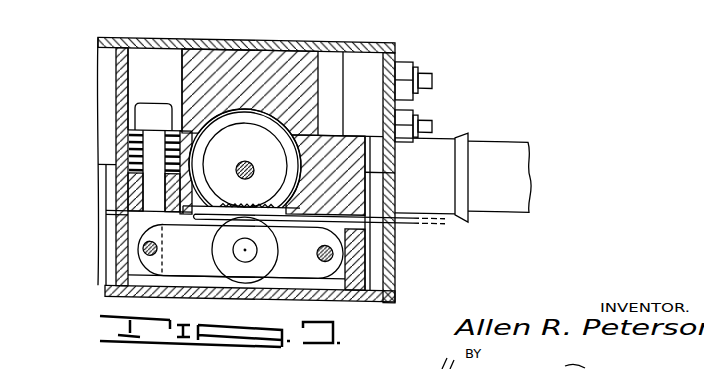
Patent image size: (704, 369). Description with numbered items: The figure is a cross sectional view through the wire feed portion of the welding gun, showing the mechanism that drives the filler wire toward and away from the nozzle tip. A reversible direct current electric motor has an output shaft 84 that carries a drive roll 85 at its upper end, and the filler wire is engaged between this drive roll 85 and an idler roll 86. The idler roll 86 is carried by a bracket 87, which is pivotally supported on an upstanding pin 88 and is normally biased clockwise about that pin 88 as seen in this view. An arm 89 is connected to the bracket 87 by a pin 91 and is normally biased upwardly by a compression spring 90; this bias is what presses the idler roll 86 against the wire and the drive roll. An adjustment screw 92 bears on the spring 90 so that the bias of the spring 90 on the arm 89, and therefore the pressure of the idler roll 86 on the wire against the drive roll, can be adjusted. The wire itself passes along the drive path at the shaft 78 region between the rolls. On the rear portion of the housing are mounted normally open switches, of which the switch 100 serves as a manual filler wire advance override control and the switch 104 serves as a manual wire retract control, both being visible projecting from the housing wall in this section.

The drive shaft 78 is at (443, 223).
The output shaft 84 is at (245, 161).
The drive roll 85 is at (290, 146).
The idler roll 86 is at (208, 258).
The bracket 87 is at (145, 274).
The upstanding pin 88 is at (338, 249).
The arm 89 is at (131, 197).
The compression spring 90 is at (100, 151).
The pin 91 is at (142, 252).
The adjustment screw 92 is at (152, 101).
The normally open switch 100 is at (437, 118).
The normally open switch 104 is at (437, 74).